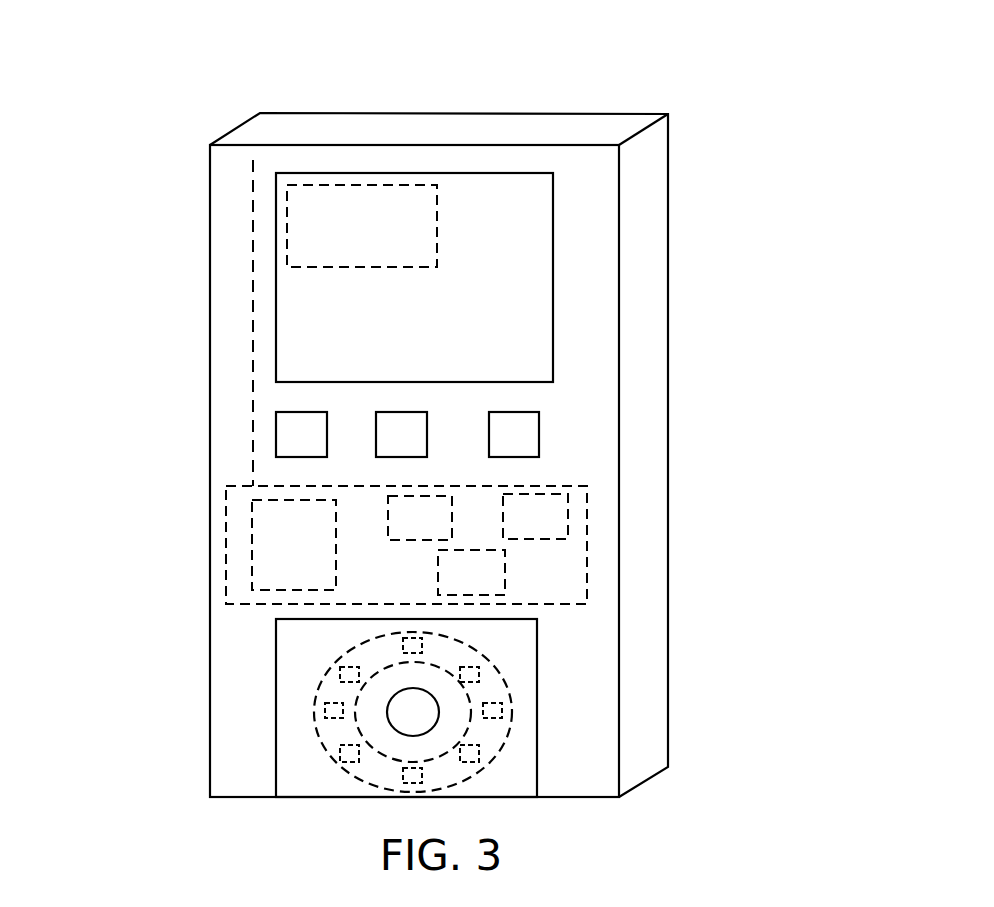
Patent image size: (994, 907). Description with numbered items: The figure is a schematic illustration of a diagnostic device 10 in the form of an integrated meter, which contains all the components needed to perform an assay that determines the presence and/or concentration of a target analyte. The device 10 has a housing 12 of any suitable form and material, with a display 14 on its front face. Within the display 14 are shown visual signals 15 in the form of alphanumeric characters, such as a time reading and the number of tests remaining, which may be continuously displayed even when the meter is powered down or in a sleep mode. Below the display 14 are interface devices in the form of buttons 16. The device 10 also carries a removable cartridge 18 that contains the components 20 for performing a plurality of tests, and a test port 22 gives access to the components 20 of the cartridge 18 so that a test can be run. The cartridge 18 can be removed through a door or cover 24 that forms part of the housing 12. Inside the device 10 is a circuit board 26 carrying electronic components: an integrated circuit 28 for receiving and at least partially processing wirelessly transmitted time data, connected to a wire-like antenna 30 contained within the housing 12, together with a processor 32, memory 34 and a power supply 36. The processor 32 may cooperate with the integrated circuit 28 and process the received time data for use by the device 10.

The device 10 is at (439, 398).
The housing 12 is at (583, 130).
The display 14 is at (537, 235).
The visual signals 15 is at (291, 171).
The buttons 16 is at (520, 425).
The removable cartridge 18 is at (325, 677).
The components 20 is at (323, 707).
The test port 22 is at (432, 718).
The door or cover 24 is at (527, 648).
The circuit board 26 is at (243, 485).
The integrated circuit 28 is at (280, 532).
The antenna 30 is at (252, 273).
The processor 32 is at (437, 518).
The memory 34 is at (553, 515).
The power supply 36 is at (488, 573).